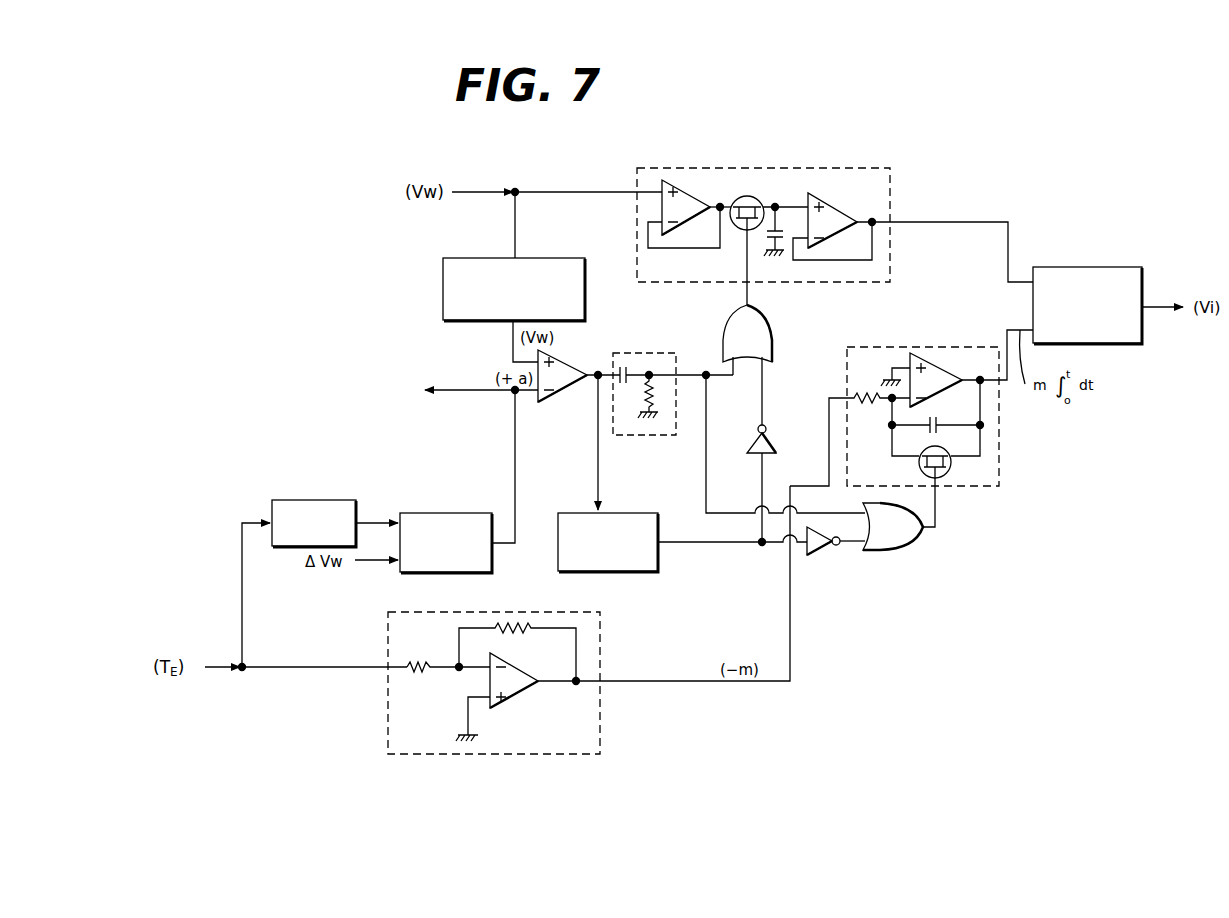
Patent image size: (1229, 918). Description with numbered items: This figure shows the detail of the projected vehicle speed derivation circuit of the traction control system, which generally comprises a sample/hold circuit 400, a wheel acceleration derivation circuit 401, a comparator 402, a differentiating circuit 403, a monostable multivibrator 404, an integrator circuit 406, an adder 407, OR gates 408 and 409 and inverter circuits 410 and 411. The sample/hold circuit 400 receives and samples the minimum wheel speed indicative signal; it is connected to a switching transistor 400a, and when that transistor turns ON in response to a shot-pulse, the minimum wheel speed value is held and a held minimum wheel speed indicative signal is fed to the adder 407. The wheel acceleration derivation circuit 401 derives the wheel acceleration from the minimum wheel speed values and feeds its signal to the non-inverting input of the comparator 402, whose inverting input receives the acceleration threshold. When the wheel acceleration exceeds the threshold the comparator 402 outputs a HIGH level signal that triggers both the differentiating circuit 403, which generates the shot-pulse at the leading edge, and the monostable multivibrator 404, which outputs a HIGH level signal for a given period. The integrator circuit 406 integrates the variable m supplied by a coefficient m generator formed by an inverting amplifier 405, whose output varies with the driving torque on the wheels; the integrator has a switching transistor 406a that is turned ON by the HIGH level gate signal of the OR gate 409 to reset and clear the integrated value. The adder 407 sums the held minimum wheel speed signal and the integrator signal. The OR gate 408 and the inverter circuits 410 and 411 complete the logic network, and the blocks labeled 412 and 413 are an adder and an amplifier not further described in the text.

The sample/hold circuit 400 is at (801, 213).
The switching transistor 400a is at (747, 196).
The wheel acceleration derivation circuit 401 is at (549, 258).
The comparator 402 is at (556, 400).
The differentiating circuit 403 is at (641, 353).
The monostable multivibrator 404 is at (660, 550).
The inverting amplifier 405 is at (600, 716).
The integrator circuit 406 is at (927, 437).
The switching transistor 406a is at (943, 478).
The adder 407 is at (1090, 267).
The OR gate 408 is at (773, 332).
The OR gate 409 is at (903, 551).
The inverter circuit 410 is at (775, 448).
The inverter circuit 411 is at (818, 555).
The adder 412 is at (443, 513).
The amplifier 413 is at (318, 490).